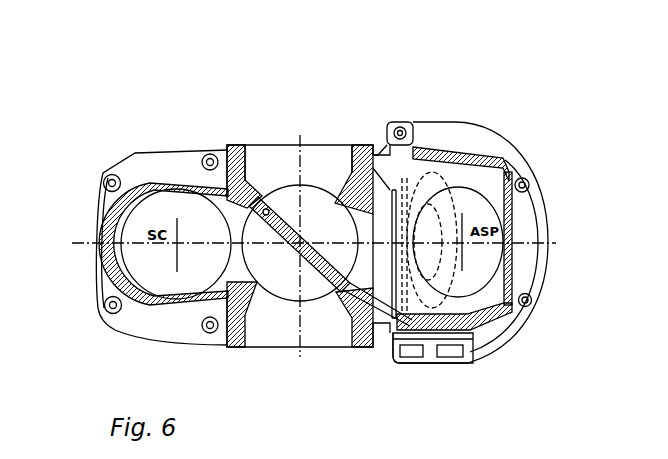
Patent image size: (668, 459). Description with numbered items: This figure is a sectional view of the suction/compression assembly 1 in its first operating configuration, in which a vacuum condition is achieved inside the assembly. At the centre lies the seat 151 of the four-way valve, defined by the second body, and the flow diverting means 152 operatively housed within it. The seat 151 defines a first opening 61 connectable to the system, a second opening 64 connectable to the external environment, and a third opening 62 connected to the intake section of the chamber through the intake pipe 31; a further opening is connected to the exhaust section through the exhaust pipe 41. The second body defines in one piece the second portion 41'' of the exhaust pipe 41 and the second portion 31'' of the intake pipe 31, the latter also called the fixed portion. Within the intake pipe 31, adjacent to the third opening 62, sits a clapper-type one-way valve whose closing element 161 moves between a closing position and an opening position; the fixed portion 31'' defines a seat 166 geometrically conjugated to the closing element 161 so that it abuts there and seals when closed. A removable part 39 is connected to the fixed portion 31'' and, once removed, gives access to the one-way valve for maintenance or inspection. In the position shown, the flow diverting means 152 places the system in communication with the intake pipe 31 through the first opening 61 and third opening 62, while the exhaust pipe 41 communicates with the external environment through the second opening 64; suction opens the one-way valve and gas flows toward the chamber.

The suction/compression assembly 1 is at (111, 128).
The exhaust pipe 41 is at (162, 223).
The second portion of the exhaust pipe 41'' is at (136, 234).
The first opening 61 is at (333, 142).
The third opening 62 is at (373, 222).
The second opening 64 is at (230, 284).
The seat 151 is at (290, 206).
The flow diverting means 152 is at (283, 250).
The seat 166 is at (395, 190).
The intake pipe 31 is at (472, 221).
The second portion of the intake pipe 31'' is at (461, 126).
The removable part 39 is at (512, 197).
The closing element 161 is at (470, 318).